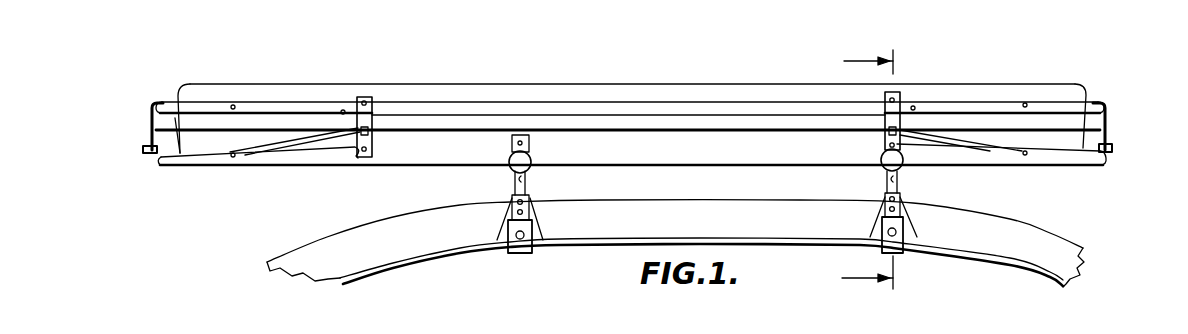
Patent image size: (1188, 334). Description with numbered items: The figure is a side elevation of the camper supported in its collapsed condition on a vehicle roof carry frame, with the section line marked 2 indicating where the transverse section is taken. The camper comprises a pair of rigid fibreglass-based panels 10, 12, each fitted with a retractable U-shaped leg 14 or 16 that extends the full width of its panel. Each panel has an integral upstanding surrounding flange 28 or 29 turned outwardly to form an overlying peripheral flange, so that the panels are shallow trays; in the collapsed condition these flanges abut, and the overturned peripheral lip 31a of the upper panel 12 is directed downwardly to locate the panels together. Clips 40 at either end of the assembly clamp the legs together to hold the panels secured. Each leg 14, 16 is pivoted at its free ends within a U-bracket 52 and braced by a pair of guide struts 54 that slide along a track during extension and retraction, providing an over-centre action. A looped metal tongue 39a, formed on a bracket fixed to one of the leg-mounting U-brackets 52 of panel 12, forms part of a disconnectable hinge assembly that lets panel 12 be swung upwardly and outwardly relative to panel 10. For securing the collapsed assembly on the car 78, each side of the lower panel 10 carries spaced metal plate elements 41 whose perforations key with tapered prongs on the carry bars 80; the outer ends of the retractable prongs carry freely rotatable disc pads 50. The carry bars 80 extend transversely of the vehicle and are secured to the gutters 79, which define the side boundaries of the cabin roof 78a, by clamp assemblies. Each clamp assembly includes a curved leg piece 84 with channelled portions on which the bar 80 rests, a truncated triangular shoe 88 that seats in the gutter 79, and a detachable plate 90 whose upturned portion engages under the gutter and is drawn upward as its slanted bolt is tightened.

The rigid panel 10 is at (340, 173).
The rigid panel 12 is at (234, 79).
The retractable U-shaped leg 14 is at (166, 163).
The retractable U-shaped leg 16 is at (993, 102).
The surrounding flange 28 is at (420, 147).
The surrounding flange 29 is at (500, 95).
The peripheral lip 31a is at (658, 120).
The looped metal tongue 39a is at (369, 130).
The clip 40 is at (1109, 120).
The metal plate element 41 is at (530, 145).
The disc pad 50 is at (896, 163).
The U-bracket 52 is at (886, 101).
The guide strut 54 is at (960, 137).
The car 78 is at (1026, 210).
The cabin roof 78a is at (1068, 248).
The gutter 79 is at (1020, 267).
The carry bar 80 is at (530, 179).
The curved leg piece 84 is at (899, 190).
The truncated triangular shoe 88 is at (884, 199).
The detachable plate 90 is at (903, 254).
The section line 2- 2 is at (856, 170).